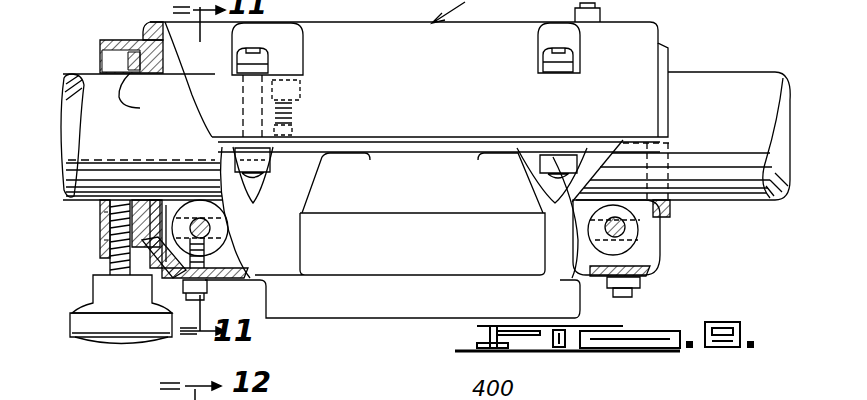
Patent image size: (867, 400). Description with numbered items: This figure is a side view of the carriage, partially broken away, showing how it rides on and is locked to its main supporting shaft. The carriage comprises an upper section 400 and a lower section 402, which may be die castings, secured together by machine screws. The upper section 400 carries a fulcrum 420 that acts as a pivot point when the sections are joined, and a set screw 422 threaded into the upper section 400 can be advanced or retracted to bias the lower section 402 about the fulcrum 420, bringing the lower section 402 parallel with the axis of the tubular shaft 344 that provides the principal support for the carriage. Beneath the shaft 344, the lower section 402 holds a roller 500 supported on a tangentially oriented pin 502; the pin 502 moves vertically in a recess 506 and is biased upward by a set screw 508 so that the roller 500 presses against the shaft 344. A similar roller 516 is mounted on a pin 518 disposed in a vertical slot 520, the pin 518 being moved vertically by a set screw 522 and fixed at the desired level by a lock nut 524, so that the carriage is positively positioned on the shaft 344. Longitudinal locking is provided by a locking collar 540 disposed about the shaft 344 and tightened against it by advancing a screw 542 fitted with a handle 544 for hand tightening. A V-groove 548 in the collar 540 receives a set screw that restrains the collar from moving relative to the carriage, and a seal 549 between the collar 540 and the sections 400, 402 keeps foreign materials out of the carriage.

The upper section 400 is at (650, 36).
The lower section 402 is at (410, 334).
The fulcrum 420 is at (548, 137).
The set screw 422 is at (299, 121).
The tubular shaft 344 is at (726, 64).
The locking collar 540 is at (94, 53).
The V-groove 548 is at (150, 98).
The seal 549 is at (150, 201).
The pin 502 is at (204, 208).
The recess 506 is at (241, 227).
The roller 500 is at (236, 216).
The set screw 508 is at (210, 292).
The screw 542 is at (100, 272).
The handle 544 is at (116, 345).
The pin 518 is at (624, 209).
The vertical slot 520 is at (662, 233).
The roller 516 is at (652, 254).
The lock nut 524 is at (650, 286).
The set screw 522 is at (648, 298).